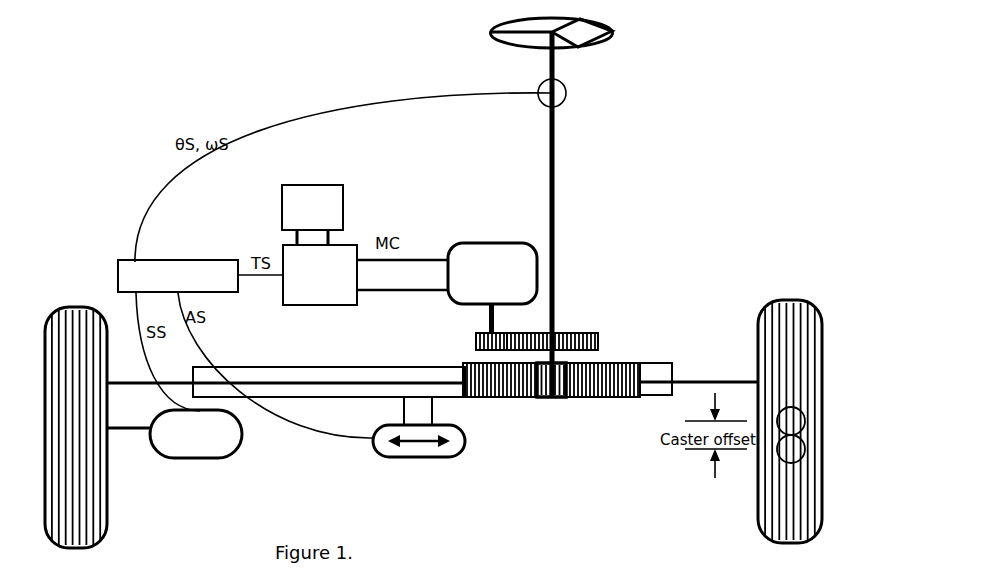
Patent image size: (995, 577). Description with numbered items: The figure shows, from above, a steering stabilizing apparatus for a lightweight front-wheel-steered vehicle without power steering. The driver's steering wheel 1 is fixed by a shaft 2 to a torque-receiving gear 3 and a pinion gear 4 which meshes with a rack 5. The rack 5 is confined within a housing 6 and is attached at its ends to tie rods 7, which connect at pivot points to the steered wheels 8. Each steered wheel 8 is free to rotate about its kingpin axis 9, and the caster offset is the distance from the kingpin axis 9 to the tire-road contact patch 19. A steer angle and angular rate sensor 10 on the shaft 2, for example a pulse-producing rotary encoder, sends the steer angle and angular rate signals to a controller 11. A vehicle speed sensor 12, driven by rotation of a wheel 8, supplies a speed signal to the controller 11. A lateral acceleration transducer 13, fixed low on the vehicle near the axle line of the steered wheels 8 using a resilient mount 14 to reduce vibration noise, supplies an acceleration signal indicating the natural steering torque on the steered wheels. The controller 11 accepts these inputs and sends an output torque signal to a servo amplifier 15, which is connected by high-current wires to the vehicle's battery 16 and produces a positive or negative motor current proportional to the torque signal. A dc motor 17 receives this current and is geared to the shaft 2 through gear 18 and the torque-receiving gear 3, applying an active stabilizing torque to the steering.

The steering wheel 1 is at (613, 30).
The shaft 2 is at (553, 200).
The torque-receiving gear 3 is at (585, 332).
The pinion gear 4 is at (551, 397).
The rack 5 is at (593, 397).
The housing 6 is at (648, 397).
The tie rods 7 is at (266, 366).
The steered wheels 8 is at (60, 306).
The kingpin axis 9 is at (780, 455).
The steer angle and angular rate sensor 10 is at (566, 93).
The controller 11 is at (120, 260).
The vehicle speed sensor 12 is at (200, 458).
The lateral acceleration transducer 13 is at (425, 457).
The resilient mount 14 is at (433, 410).
The servo amplifier 15 is at (292, 305).
The battery 16 is at (313, 185).
The dc motor 17 is at (516, 242).
The gear 18 is at (470, 335).
The tire-road contact patch 19 is at (798, 423).